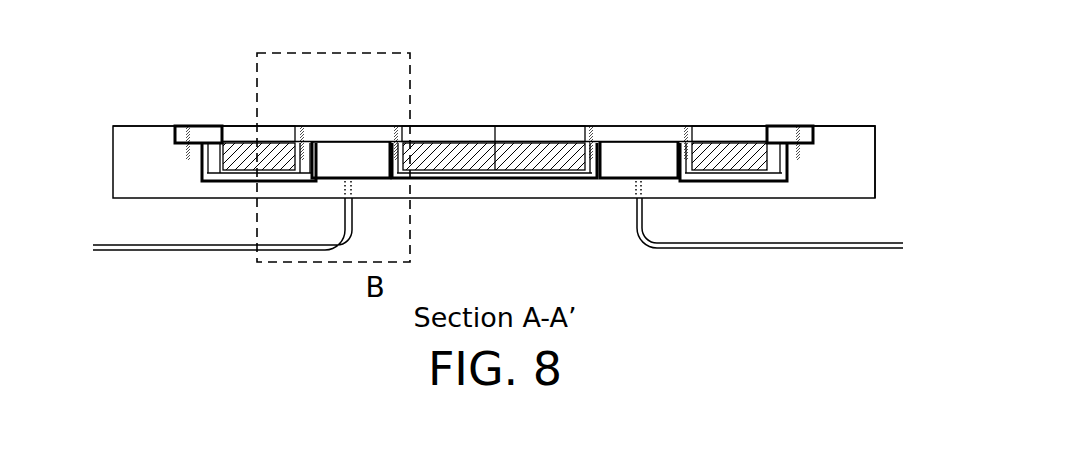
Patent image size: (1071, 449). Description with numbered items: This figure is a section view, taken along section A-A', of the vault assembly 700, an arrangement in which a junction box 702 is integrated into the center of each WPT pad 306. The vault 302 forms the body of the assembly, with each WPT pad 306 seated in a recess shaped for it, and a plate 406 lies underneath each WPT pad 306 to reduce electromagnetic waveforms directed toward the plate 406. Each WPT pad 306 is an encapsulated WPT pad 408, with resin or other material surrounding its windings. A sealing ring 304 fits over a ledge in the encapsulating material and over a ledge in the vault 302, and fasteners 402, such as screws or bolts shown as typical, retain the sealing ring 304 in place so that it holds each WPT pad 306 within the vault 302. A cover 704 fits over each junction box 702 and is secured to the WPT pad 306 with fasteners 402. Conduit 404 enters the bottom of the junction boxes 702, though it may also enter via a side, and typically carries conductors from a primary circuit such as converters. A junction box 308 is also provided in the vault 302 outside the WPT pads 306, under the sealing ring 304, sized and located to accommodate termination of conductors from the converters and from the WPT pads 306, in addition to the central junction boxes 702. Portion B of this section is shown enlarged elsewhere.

The vault assembly 700 is at (112, 40).
The vault 302 is at (227, 200).
The sealing ring 304 is at (216, 125).
The WPT pad 306 is at (295, 126).
The junction box 308 is at (810, 165).
The fasteners 402 is at (190, 125).
The conduit 404 is at (300, 248).
The plate 406 is at (442, 177).
The encapsulated WPT pad 408 is at (247, 122).
The junction box 702 is at (350, 163).
The cover 704 is at (390, 126).